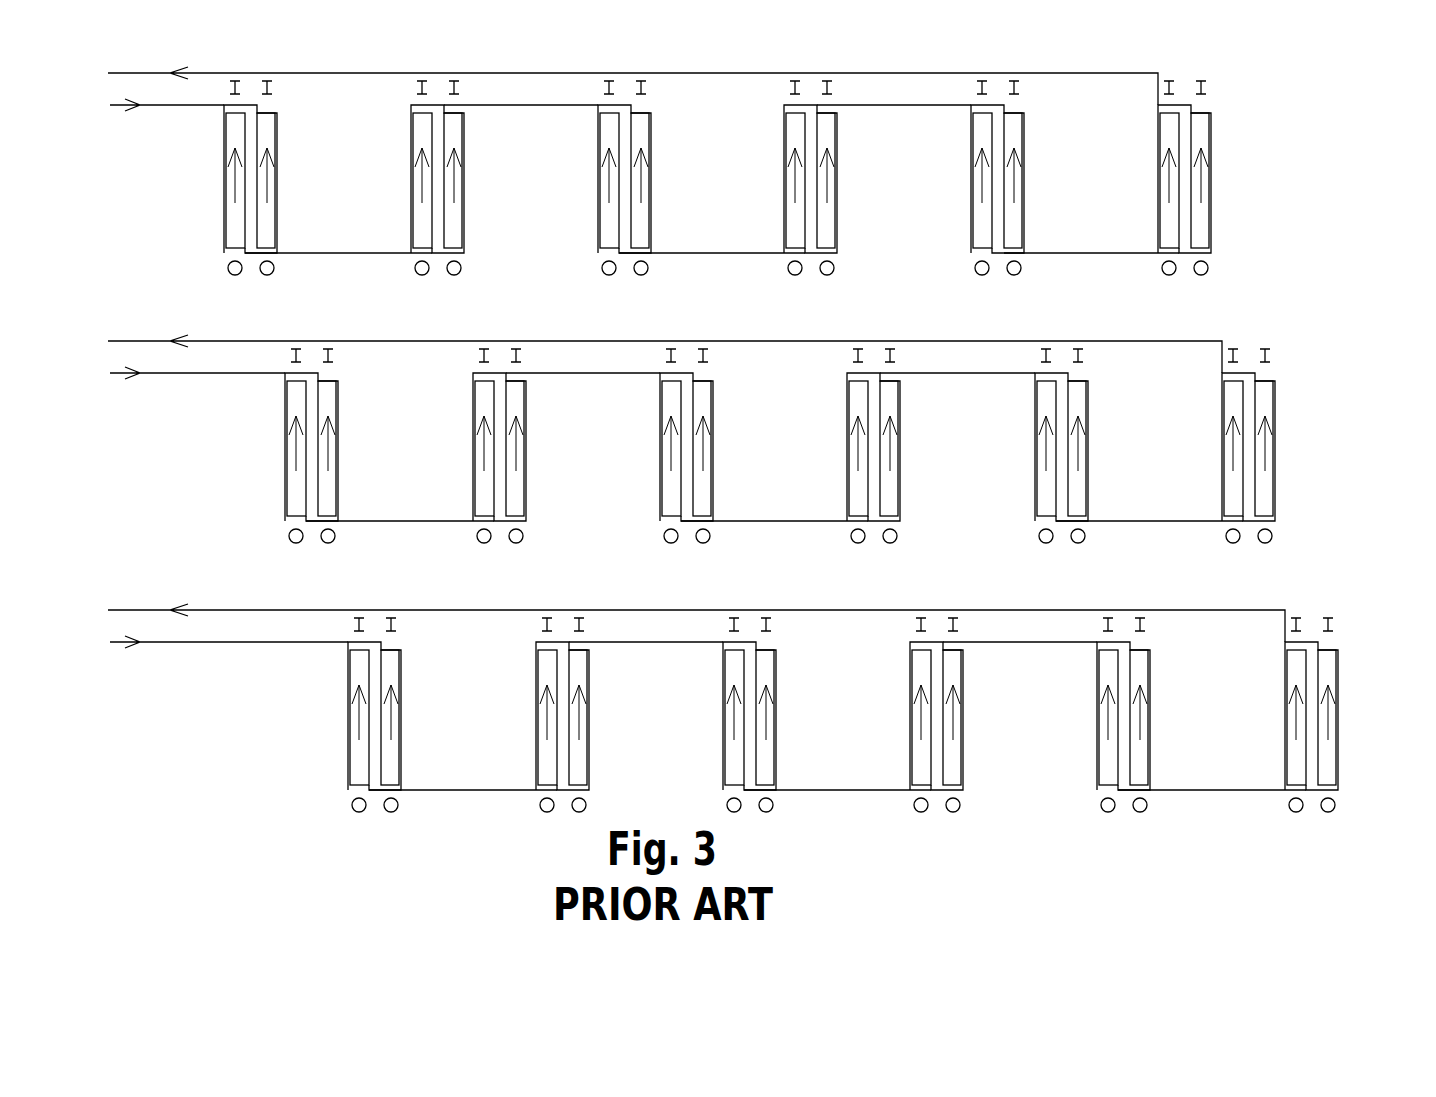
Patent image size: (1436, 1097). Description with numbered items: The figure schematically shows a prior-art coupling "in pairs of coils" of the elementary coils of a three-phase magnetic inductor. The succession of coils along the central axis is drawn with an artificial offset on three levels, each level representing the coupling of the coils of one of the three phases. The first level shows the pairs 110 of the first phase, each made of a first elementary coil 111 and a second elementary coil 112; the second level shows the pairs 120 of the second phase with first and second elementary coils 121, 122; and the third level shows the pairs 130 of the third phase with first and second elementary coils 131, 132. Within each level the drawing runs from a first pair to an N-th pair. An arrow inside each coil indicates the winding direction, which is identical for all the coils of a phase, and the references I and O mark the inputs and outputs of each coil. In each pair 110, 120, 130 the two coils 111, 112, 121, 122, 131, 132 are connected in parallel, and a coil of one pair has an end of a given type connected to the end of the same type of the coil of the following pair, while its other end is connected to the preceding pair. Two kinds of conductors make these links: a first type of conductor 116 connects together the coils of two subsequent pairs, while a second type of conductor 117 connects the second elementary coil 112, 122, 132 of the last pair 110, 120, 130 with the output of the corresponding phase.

The pair of elementary coils of phase P1 110 is at (691, 162).
The first elementary coil of phase P1 111 is at (1158, 150).
The second elementary coil of phase P1 112 is at (278, 182).
The first type of conductor 116 is at (366, 256).
The second type of conductor 117 is at (637, 72).
The pair of elementary coils of phase P2 120 is at (721, 423).
The first elementary coil of phase P2 121 is at (1222, 432).
The second elementary coil of phase P2 122 is at (339, 455).
The pair of elementary coils of phase P3 130 is at (752, 692).
The first elementary coil of phase P3 131 is at (1285, 710).
The second elementary coil of phase P3 132 is at (402, 722).